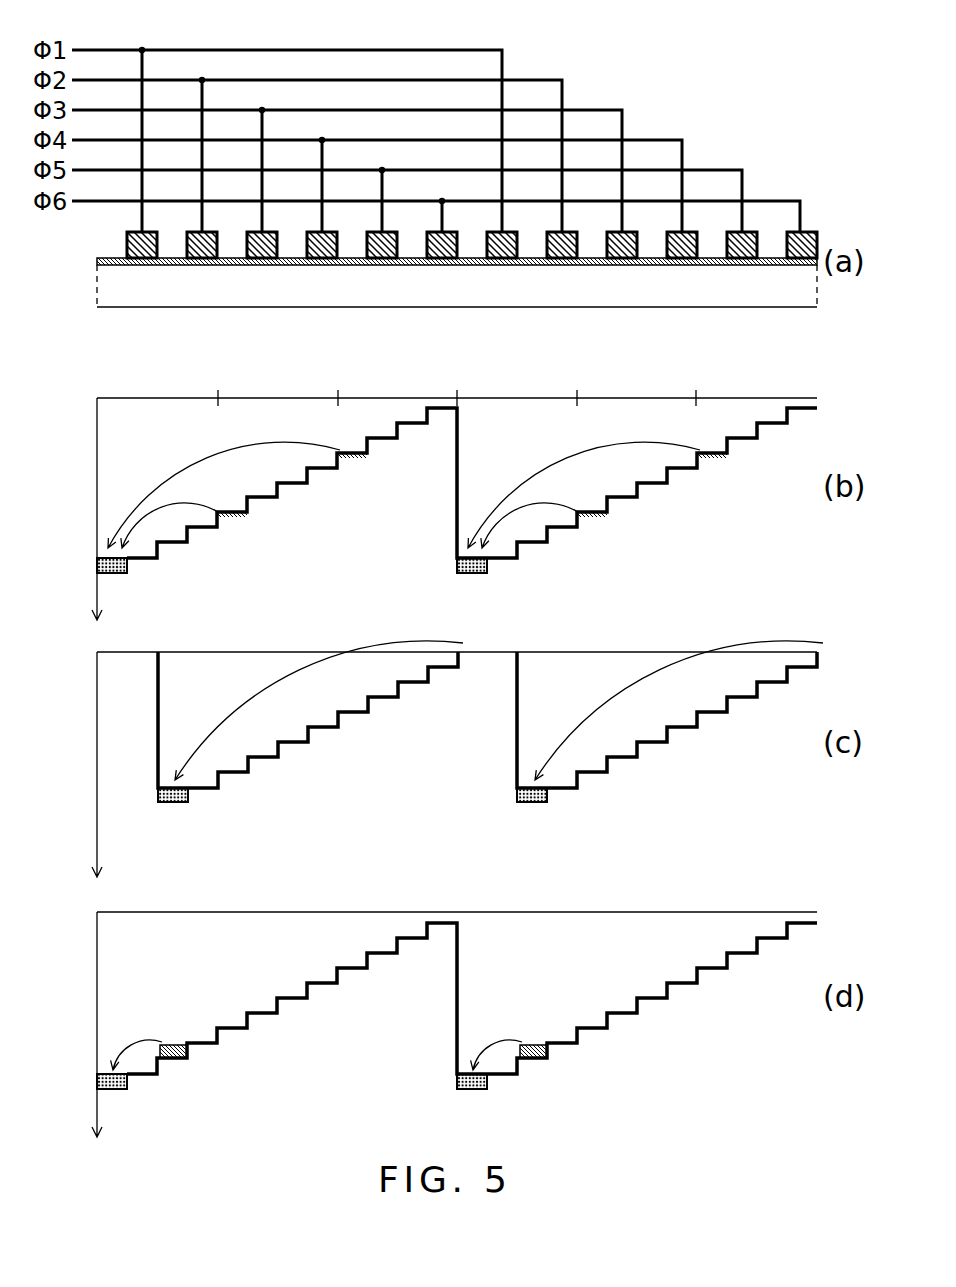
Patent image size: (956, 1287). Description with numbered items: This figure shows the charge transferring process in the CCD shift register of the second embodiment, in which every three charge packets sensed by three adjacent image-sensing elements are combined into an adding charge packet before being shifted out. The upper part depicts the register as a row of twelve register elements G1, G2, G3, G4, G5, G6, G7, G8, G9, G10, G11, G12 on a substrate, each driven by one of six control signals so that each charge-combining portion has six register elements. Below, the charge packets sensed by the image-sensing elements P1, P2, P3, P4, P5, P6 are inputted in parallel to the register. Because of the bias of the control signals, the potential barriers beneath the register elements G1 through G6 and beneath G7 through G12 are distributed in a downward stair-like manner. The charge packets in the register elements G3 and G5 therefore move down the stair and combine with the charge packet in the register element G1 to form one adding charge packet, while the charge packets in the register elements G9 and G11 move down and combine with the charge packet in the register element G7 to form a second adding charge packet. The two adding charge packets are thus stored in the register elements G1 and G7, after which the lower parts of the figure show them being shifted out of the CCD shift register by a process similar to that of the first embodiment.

The register element G1 is at (129, 154).
The register element G2 is at (189, 169).
The register element G3 is at (249, 184).
The register element G4 is at (309, 199).
The register element G5 is at (369, 214).
The register element G6 is at (429, 229).
The register element G7 is at (489, 245).
The register element G8 is at (549, 245).
The register element G9 is at (608, 245).
The register element G10 is at (666, 245).
The register element G11 is at (726, 245).
The register element G12 is at (786, 245).
The image-sensing element P1 is at (117, 418).
The image-sensing element P2 is at (232, 430).
The image-sensing element P3 is at (357, 415).
The image-sensing element P4 is at (477, 417).
The image-sensing element P5 is at (590, 428).
The image-sensing element P6 is at (715, 415).